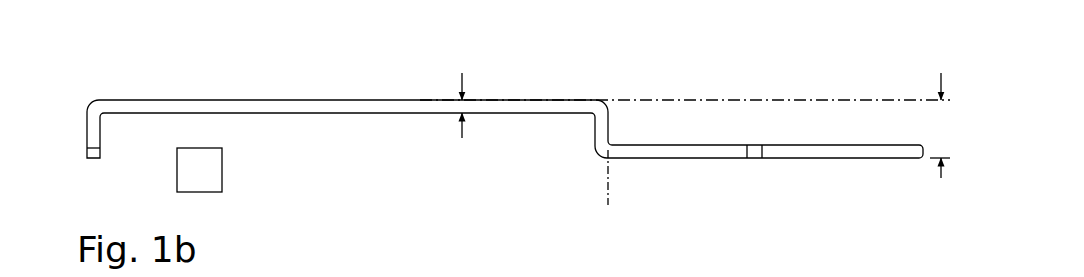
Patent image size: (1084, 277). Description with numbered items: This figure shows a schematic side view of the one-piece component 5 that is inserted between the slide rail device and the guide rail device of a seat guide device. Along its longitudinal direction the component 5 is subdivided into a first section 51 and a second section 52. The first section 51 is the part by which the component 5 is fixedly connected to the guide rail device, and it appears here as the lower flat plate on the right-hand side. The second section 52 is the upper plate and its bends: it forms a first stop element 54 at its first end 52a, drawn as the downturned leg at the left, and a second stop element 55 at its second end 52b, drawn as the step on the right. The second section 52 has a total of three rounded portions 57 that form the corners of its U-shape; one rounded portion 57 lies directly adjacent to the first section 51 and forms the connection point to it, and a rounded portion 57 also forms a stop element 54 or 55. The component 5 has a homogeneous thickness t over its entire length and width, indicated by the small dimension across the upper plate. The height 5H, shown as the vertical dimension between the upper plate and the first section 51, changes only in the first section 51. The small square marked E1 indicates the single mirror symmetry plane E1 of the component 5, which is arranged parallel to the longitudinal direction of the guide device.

The component 5 is at (482, 112).
The first section 51 is at (608, 185).
The second section 52 is at (608, 185).
The first end 52a is at (97, 62).
The second end 52b is at (598, 88).
The first stop element 54 is at (87, 105).
The second stop element 55 is at (613, 102).
The rounded portion 57 is at (93, 97).
The thickness t is at (463, 104).
The height 5H is at (941, 130).
The mirror symmetry plane E1 is at (212, 168).